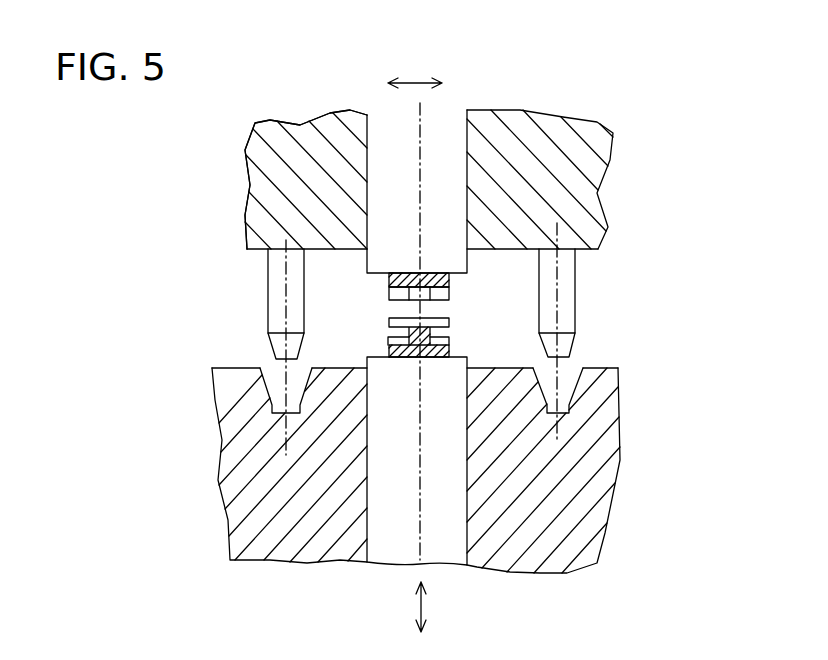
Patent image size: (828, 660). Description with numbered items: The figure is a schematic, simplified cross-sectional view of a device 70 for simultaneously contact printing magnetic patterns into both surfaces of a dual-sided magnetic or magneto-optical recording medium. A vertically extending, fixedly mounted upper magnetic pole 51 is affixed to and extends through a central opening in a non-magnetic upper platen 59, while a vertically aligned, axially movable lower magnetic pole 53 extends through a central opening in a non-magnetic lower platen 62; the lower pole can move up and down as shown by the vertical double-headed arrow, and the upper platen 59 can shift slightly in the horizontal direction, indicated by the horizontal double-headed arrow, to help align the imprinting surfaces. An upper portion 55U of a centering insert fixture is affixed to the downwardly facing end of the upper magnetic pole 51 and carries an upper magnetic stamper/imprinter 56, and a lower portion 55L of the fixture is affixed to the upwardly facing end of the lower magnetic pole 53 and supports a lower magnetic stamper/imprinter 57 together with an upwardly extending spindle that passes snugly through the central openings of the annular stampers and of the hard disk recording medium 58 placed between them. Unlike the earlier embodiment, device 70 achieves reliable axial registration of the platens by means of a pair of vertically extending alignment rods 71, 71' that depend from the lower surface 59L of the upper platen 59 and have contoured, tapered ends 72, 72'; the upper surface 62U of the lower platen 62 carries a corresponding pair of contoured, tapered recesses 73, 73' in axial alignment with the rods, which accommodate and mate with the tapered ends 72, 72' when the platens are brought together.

The device 70 is at (196, 176).
The upper magnetic pole 51 is at (452, 125).
The lower magnetic pole 53 is at (448, 548).
The upper platen 59 is at (600, 163).
The lower surface of upper platen 59L is at (258, 250).
The lower platen 62 is at (598, 487).
The upper surface of lower platen 62U is at (598, 367).
The alignment rod 71 is at (602, 285).
The contoured end 72 is at (601, 317).
The alignment rod 71' is at (234, 291).
The contoured end 72' is at (234, 339).
The contoured recess 73 is at (607, 390).
The contoured recess 73' is at (231, 390).
The upper portion of centering insert fixture 55U is at (390, 282).
The lower portion of centering insert fixture 55L is at (390, 348).
The upper magnetic stamper/imprinter 56 is at (449, 292).
The lower magnetic stamper/imprinter 57 is at (449, 343).
The hard disk recording medium 58 is at (449, 322).